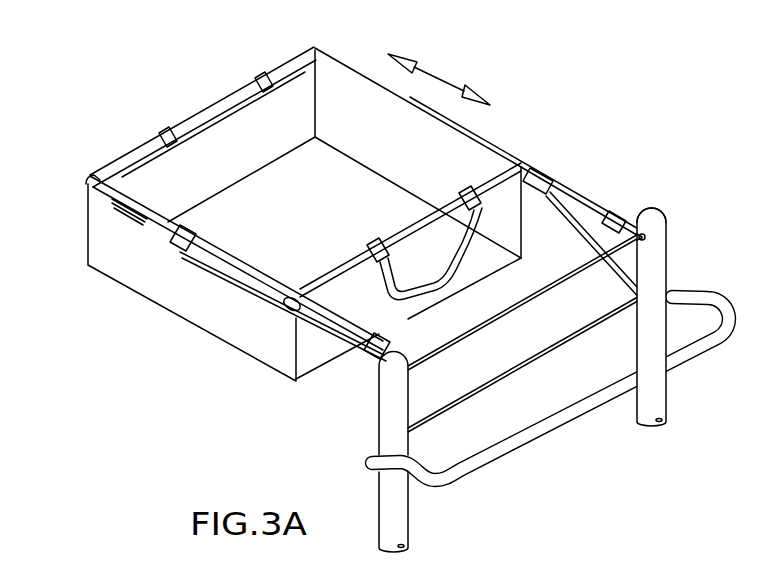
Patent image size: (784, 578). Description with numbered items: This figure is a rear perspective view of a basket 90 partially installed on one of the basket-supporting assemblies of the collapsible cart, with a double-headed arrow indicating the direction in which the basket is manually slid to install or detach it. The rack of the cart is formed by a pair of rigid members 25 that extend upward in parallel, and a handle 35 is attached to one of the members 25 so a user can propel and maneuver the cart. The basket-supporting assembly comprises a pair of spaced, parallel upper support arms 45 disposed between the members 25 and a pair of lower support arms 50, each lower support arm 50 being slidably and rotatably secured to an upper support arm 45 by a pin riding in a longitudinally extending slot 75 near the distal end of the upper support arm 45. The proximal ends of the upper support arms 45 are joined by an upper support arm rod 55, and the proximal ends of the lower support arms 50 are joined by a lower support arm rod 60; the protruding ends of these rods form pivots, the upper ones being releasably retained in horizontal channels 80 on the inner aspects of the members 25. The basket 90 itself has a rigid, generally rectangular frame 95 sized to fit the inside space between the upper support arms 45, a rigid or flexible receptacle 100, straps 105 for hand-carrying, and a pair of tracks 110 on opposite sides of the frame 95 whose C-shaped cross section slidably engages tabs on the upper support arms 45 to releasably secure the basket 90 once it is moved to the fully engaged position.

The rigid member 25 is at (398, 383).
The handle 35 is at (537, 437).
The upper support arm 45 is at (342, 320).
The lower support arm 50 is at (356, 372).
The upper support arm rod 55 is at (507, 312).
The lower support arm rod 60 is at (543, 355).
The slot 75 is at (193, 240).
The channel 80 is at (660, 220).
The basket 90 is at (93, 73).
The frame 95 is at (86, 188).
The receptacle 100 is at (107, 263).
The strap 105 is at (473, 206).
The track 110 is at (122, 200).